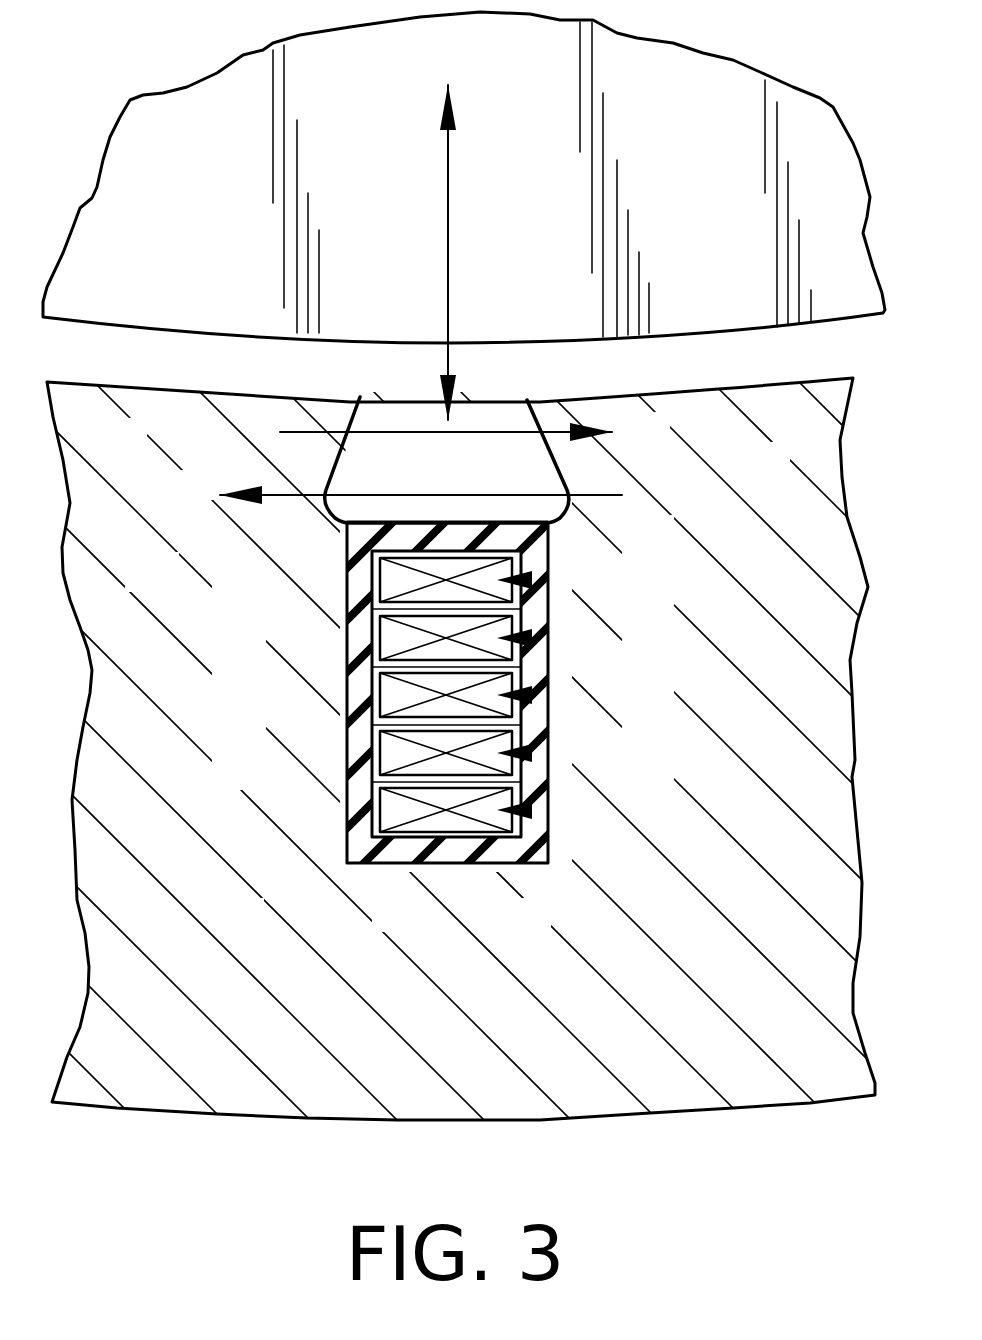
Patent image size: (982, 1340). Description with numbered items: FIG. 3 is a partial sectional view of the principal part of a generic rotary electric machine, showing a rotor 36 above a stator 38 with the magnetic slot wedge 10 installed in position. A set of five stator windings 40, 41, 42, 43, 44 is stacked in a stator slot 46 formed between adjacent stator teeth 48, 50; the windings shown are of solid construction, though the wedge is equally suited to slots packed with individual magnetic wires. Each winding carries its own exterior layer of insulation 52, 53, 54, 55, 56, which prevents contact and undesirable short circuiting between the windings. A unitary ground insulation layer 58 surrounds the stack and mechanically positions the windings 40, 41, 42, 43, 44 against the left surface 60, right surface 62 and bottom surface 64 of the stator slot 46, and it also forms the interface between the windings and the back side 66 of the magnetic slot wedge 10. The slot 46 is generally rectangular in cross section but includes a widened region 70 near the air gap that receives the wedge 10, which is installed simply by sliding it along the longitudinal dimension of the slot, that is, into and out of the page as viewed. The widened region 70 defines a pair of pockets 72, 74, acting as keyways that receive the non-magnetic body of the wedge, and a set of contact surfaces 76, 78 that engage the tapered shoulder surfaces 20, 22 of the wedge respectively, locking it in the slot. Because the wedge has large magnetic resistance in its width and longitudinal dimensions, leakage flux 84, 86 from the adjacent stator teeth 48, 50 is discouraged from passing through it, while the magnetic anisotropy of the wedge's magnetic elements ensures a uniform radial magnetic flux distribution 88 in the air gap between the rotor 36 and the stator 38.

The magnetic slot wedge 10 is at (432, 483).
The shoulder surface 20 is at (340, 426).
The shoulder surface 22 is at (547, 405).
The rotor 36 is at (228, 167).
The stator 38 is at (598, 1075).
The stator winding 40 is at (390, 577).
The stator winding 41 is at (390, 638).
The stator winding 42 is at (390, 695).
The stator winding 43 is at (390, 753).
The stator winding 44 is at (390, 808).
The stator slot 46 is at (350, 868).
The stator tooth 48 is at (99, 455).
The stator tooth 50 is at (744, 478).
The insulation layer 52 is at (548, 580).
The insulation layer 53 is at (548, 635).
The insulation layer 54 is at (548, 692).
The insulation layer 55 is at (548, 746).
The insulation layer 56 is at (548, 795).
The ground insulation layer 58 is at (492, 866).
The left surface of stator slot 60 is at (349, 610).
The right surface of stator slot 62 is at (548, 560).
The bottom surface of stator slot 64 is at (430, 838).
The back side of magnetic slot wedge 66 is at (548, 542).
The widened region 70 is at (318, 508).
The pocket 72 is at (332, 485).
The pocket 74 is at (563, 489).
The contact surface 76 is at (346, 416).
The contact surface 78 is at (538, 415).
The leakage flux 84 is at (472, 430).
The leakage flux 86 is at (397, 487).
The radial magnetic flux distribution 88 is at (447, 205).